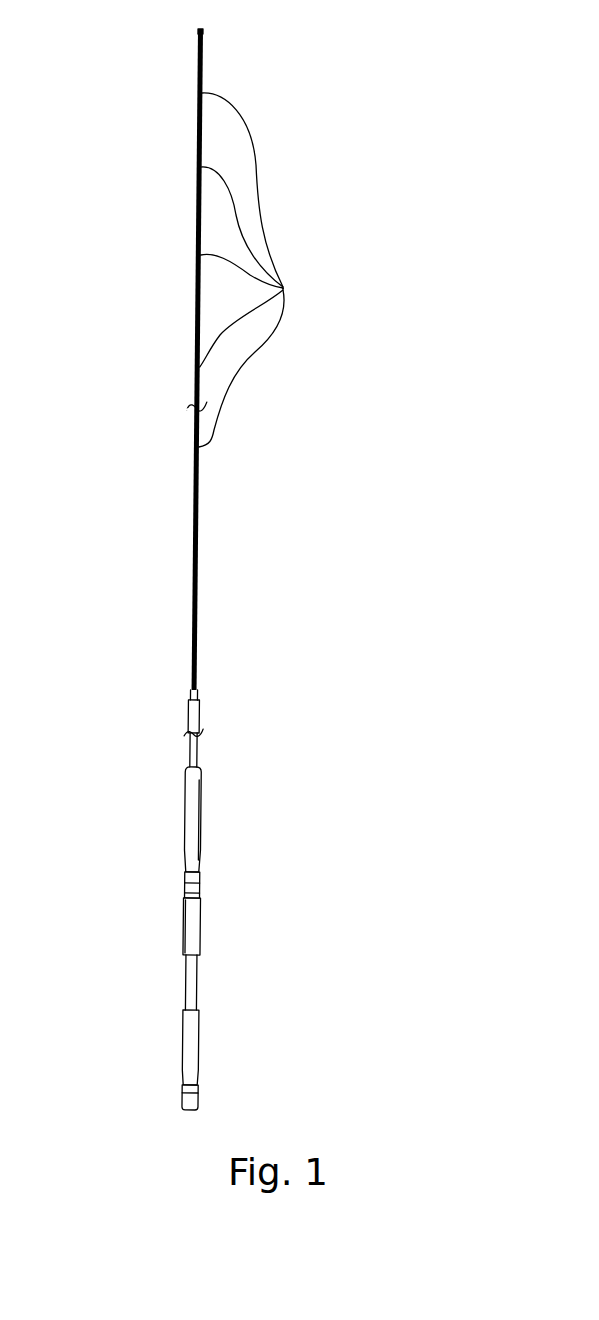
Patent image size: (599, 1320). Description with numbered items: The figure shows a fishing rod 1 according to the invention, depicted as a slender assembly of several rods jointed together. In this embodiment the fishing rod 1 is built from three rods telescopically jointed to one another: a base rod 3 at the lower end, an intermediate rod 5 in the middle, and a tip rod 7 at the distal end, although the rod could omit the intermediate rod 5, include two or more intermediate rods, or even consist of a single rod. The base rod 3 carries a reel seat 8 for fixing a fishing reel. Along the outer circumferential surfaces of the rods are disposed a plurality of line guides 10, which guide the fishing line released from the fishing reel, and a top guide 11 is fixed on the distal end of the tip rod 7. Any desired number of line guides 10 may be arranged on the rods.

The fishing rod 1 is at (352, 145).
The base rod 3 is at (198, 750).
The intermediate rod 5 is at (198, 527).
The tip rod 7 is at (199, 133).
The reel seat 8 is at (205, 893).
The line guides 10 is at (275, 627).
The top guide 11 is at (204, 29).